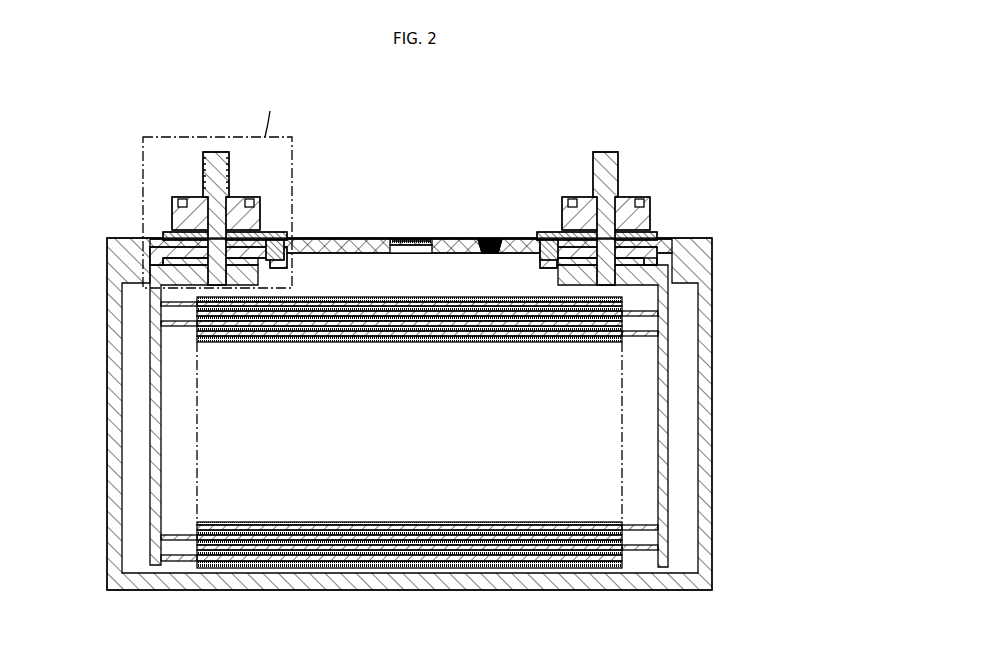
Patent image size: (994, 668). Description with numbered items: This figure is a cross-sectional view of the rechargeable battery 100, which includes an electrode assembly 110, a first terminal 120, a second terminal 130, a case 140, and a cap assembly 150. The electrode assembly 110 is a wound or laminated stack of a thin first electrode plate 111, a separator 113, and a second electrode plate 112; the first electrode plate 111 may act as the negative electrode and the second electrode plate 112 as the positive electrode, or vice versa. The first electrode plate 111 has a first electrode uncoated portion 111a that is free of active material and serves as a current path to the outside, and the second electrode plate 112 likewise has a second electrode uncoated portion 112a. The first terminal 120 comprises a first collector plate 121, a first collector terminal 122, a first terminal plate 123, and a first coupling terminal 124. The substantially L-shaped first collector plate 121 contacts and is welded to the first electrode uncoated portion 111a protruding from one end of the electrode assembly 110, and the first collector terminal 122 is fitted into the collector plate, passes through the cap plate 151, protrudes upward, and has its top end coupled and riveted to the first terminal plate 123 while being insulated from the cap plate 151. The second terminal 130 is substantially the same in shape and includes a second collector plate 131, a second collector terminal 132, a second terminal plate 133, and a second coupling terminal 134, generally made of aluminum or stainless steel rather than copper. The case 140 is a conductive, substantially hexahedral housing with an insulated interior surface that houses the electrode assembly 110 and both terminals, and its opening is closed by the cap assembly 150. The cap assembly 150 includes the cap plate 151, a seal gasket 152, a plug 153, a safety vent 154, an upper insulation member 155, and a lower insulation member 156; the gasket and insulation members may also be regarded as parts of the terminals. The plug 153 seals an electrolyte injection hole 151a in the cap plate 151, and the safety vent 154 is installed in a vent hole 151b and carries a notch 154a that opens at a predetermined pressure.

The rechargeable battery 100 is at (711, 103).
The electrode assembly 110 is at (409, 468).
The first electrode plate 111 is at (302, 570).
The first electrode uncoated portion 111a is at (180, 566).
The second electrode plate 112 is at (555, 570).
The second electrode uncoated portion 112a is at (636, 552).
The separator 113 is at (428, 569).
The first terminal 120 is at (352, 327).
The first collector plate 121 is at (146, 395).
The first collector terminal 122 is at (192, 244).
The first terminal plate 123 is at (168, 209).
The first coupling terminal 124 is at (198, 168).
The second terminal 130 is at (665, 329).
The second collector plate 131 is at (672, 395).
The second collector terminal 132 is at (628, 245).
The second terminal plate 133 is at (655, 213).
The second coupling terminal 134 is at (626, 174).
The case 140 is at (714, 340).
The cap assembly 150 is at (494, 166).
The cap plate 151 is at (326, 239).
The electrolyte injection hole 151a is at (490, 255).
The vent hole 151b is at (412, 255).
The seal gasket 152 is at (265, 240).
The plug 153 is at (489, 238).
The safety vent 154 is at (428, 239).
The notch 154a is at (408, 239).
The upper insulation member 155 is at (268, 234).
The lower insulation member 156 is at (281, 262).